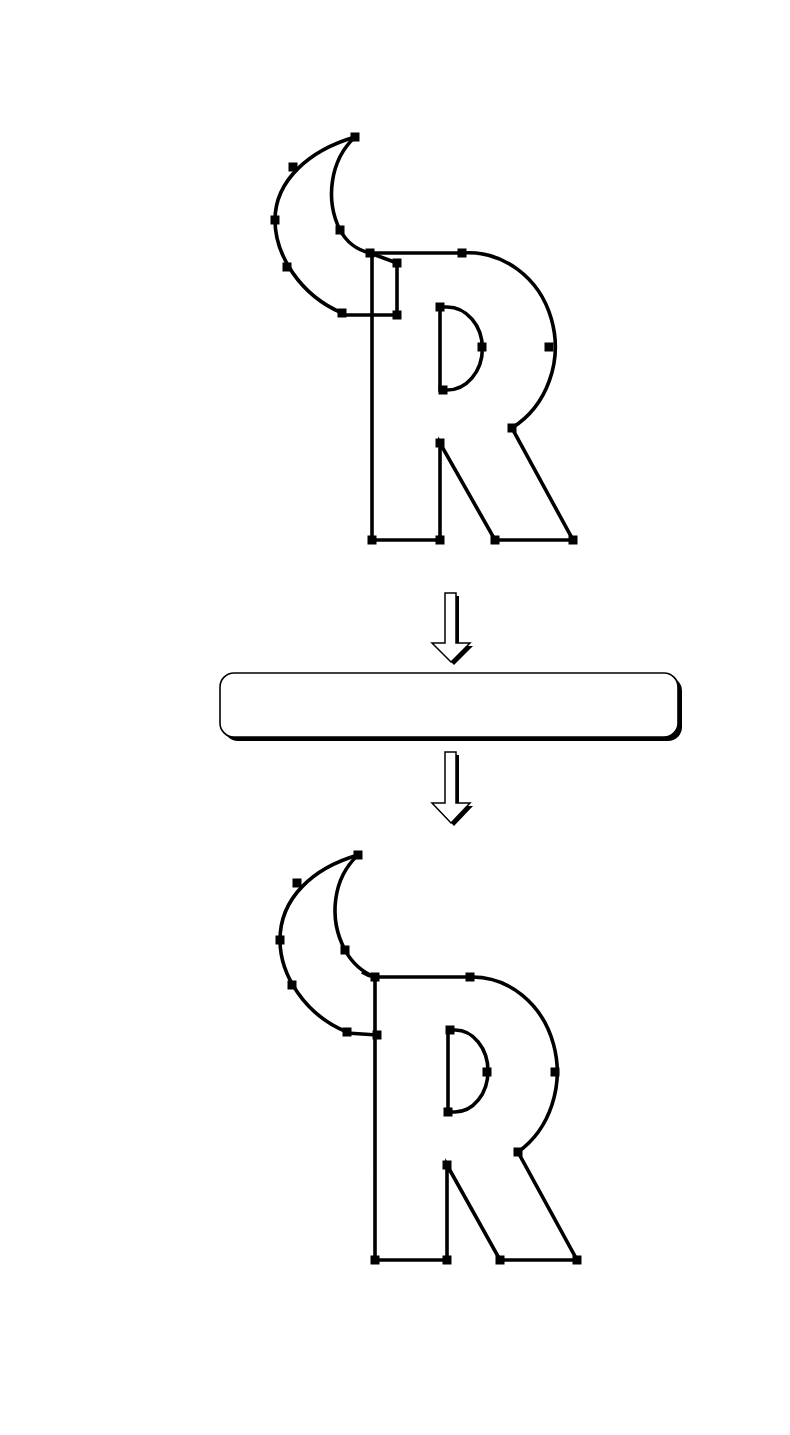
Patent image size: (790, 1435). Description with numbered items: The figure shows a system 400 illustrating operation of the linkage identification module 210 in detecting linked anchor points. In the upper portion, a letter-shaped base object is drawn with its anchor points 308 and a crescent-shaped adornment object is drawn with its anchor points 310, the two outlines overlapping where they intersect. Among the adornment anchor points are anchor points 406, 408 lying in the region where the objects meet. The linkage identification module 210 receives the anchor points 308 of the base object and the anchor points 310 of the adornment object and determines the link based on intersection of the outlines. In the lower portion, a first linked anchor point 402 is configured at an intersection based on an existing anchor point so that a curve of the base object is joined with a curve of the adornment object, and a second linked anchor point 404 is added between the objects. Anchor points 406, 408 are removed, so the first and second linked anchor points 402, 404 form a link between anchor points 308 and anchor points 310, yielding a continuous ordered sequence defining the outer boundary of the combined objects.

The system 400 is at (186, 68).
The anchor points of the adornment object 310 is at (263, 138).
The anchor points of the base object 308 is at (541, 239).
The anchor point 406 is at (398, 252).
The anchor point 408 is at (394, 318).
The first linked anchor point 402 is at (379, 974).
The second linked anchor point 404 is at (372, 1042).
The linkage identification module 210 is at (623, 717).